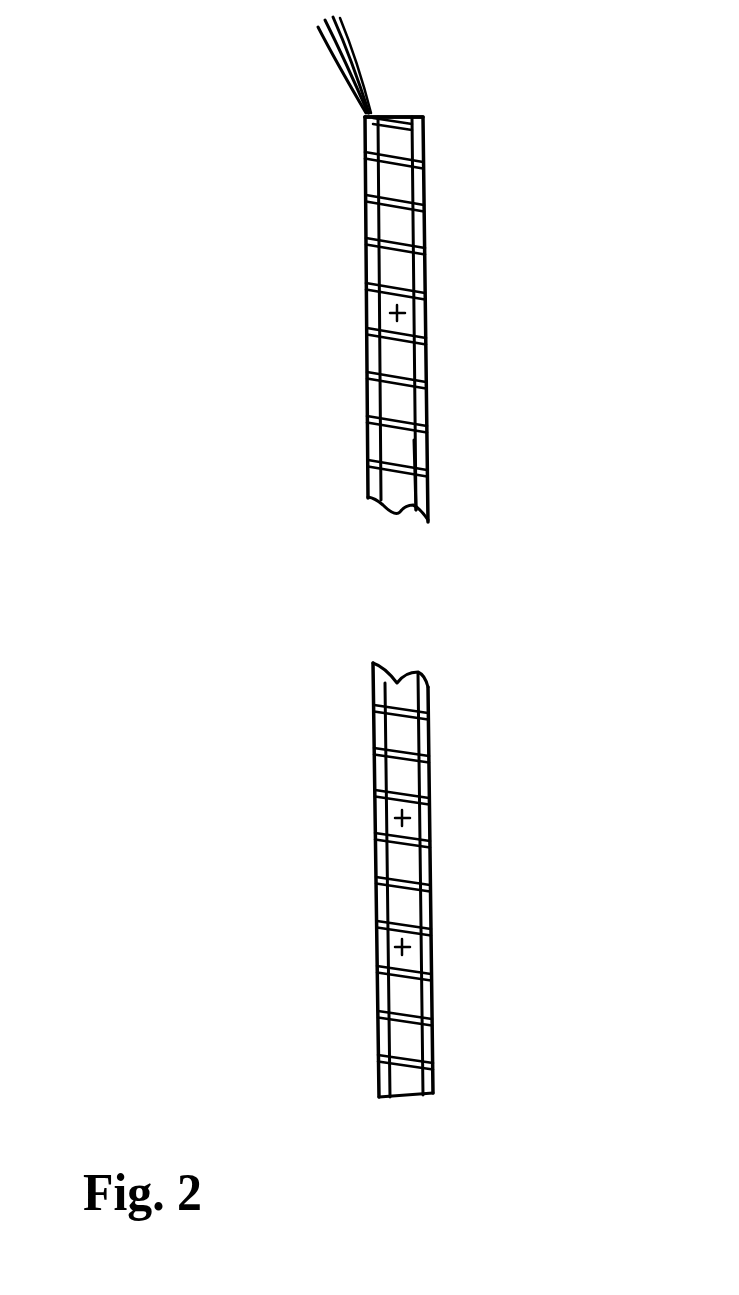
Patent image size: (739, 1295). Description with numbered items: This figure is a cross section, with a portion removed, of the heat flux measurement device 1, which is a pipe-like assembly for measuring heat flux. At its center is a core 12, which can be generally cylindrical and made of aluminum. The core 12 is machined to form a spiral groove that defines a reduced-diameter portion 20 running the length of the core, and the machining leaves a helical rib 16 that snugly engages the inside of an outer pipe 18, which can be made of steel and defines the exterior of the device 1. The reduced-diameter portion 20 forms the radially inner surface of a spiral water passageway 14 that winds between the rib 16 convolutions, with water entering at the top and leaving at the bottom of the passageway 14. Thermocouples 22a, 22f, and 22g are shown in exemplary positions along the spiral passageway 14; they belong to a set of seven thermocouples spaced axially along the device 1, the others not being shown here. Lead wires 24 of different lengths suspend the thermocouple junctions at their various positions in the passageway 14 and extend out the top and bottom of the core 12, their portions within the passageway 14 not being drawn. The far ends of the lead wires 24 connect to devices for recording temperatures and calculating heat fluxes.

The heat flux measurement device 1 is at (347, 237).
The core 12 is at (393, 116).
The spiral water passageway 14 is at (418, 185).
The helical rib 16 is at (390, 285).
The outer pipe 18 is at (426, 402).
The reduced-diameter portion 20 is at (418, 446).
The thermocouple 22a is at (400, 314).
The thermocouple 22f is at (398, 818).
The thermocouple 22g is at (398, 947).
The lead wires 24 is at (337, 62).